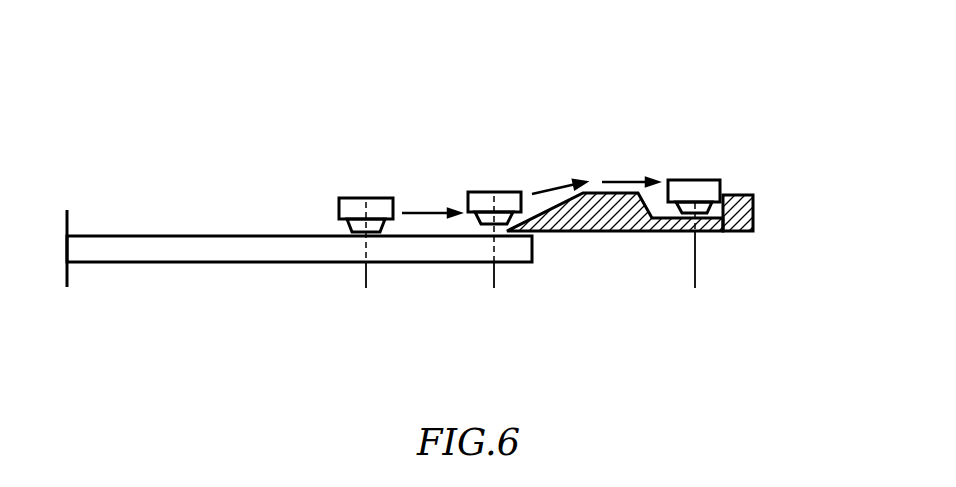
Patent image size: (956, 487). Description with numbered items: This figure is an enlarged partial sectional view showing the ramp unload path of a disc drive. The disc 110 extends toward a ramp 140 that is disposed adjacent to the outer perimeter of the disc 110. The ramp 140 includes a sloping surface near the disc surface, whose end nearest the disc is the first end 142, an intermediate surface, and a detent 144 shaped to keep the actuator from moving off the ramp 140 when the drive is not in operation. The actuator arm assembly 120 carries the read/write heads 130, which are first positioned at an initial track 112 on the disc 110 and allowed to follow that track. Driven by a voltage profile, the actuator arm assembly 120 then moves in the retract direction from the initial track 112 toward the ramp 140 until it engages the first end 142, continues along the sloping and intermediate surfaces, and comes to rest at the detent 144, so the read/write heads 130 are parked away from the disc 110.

The disc 110 is at (183, 248).
The initial track 112 is at (360, 277).
The actuator arm assembly 120 is at (707, 195).
The read/write heads 130 is at (667, 203).
The ramp 140 is at (753, 197).
The first end 142 is at (493, 280).
The detent 144 is at (690, 275).